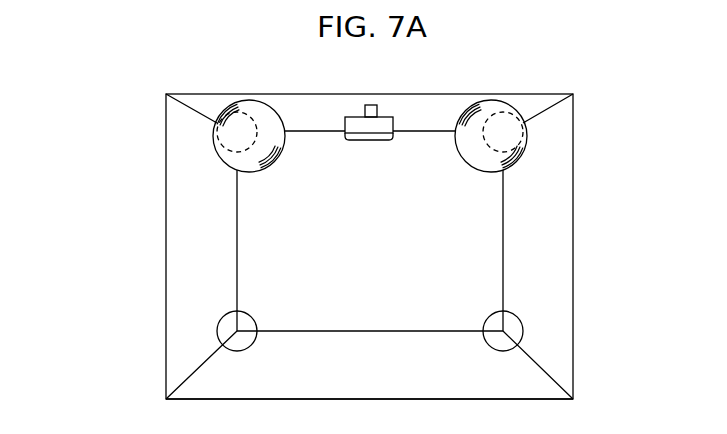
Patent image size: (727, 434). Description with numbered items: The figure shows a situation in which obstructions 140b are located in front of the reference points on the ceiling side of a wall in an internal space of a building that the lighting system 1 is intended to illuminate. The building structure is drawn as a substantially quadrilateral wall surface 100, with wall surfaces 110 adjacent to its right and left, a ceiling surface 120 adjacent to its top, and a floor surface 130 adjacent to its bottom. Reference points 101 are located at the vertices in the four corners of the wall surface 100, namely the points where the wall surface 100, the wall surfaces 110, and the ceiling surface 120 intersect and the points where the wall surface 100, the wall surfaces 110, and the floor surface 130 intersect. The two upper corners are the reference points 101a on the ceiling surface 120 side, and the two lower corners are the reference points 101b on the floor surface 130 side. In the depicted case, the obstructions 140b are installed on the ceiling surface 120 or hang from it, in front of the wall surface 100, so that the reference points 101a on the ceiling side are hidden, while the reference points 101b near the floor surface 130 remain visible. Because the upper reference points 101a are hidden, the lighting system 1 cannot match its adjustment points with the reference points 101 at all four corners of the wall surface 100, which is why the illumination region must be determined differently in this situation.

The lighting system 1 is at (383, 111).
The wall surface 100 is at (447, 213).
The reference points 101 is at (367, 221).
The reference points on the ceiling surface side 101a is at (217, 124).
The reference points on the floor surface side 101b is at (218, 336).
The wall surface 110 is at (202, 270).
The ceiling surface 120 is at (448, 112).
The floor surface 130 is at (478, 377).
The obstructions 140b is at (216, 150).